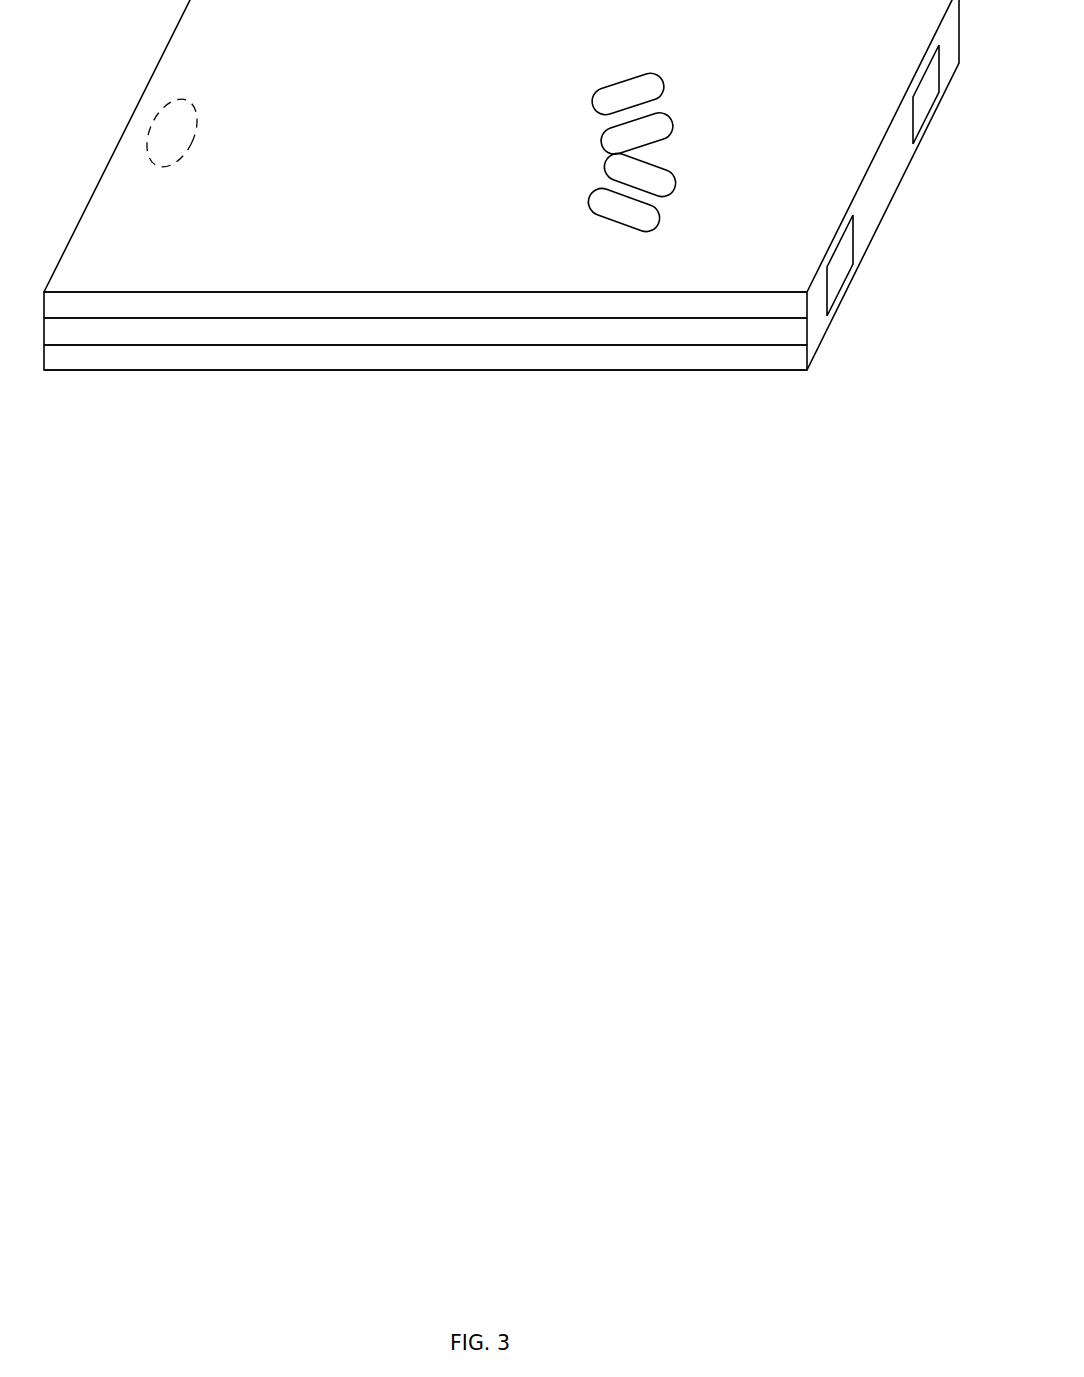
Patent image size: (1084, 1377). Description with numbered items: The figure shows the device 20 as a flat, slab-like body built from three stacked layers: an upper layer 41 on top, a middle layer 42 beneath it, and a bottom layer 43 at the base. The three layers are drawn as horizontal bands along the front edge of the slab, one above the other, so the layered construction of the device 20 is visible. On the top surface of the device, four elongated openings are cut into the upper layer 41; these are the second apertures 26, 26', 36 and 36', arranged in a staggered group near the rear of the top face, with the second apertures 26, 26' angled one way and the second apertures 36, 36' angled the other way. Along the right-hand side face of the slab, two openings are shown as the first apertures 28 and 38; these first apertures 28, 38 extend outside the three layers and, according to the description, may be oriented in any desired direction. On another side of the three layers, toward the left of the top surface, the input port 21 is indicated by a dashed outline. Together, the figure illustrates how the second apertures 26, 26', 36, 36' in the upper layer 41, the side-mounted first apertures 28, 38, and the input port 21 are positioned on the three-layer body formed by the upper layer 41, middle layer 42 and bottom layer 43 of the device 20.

The device 20 is at (441, 522).
The input port 21 is at (184, 144).
The second aperture 26 is at (616, 80).
The second aperture 26' is at (669, 124).
The second aperture 36 is at (673, 175).
The second aperture 36' is at (642, 226).
The first aperture 28 is at (925, 105).
The first aperture 38 is at (835, 275).
The upper layer 41 is at (374, 318).
The middle layer 42 is at (462, 344).
The bottom layer 43 is at (546, 366).